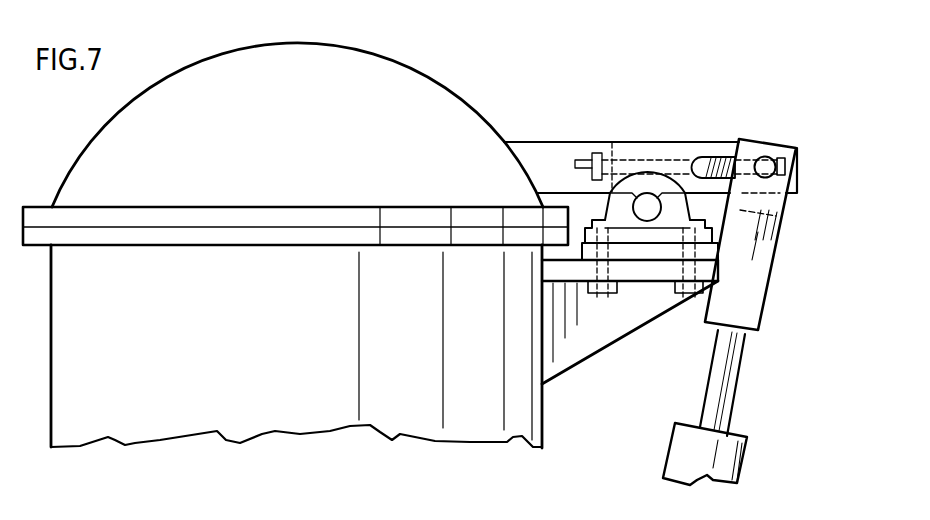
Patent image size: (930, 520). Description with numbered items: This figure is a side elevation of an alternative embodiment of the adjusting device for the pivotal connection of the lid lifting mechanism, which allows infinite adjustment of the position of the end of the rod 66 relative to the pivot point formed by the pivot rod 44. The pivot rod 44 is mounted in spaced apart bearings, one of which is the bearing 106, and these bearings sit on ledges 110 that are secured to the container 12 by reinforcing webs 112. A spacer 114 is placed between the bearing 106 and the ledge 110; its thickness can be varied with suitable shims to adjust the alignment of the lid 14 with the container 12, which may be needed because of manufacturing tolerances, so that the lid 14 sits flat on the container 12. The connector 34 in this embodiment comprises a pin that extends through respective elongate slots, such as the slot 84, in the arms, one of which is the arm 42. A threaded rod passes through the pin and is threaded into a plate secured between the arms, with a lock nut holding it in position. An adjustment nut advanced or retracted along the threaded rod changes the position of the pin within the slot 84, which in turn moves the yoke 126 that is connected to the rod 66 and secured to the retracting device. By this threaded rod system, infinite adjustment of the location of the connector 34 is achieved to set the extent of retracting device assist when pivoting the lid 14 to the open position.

The container 12 is at (67, 370).
The lid 14 is at (440, 113).
The connector 34 is at (756, 140).
The arm 42 is at (555, 145).
The pivot rod 44 is at (647, 200).
The rod 66 is at (723, 405).
The slot 84 is at (707, 154).
The bearing 106 is at (615, 225).
The ledge 110 is at (563, 269).
The reinforcing web 112 is at (548, 345).
The spacer 114 is at (653, 250).
The yoke 126 is at (745, 320).